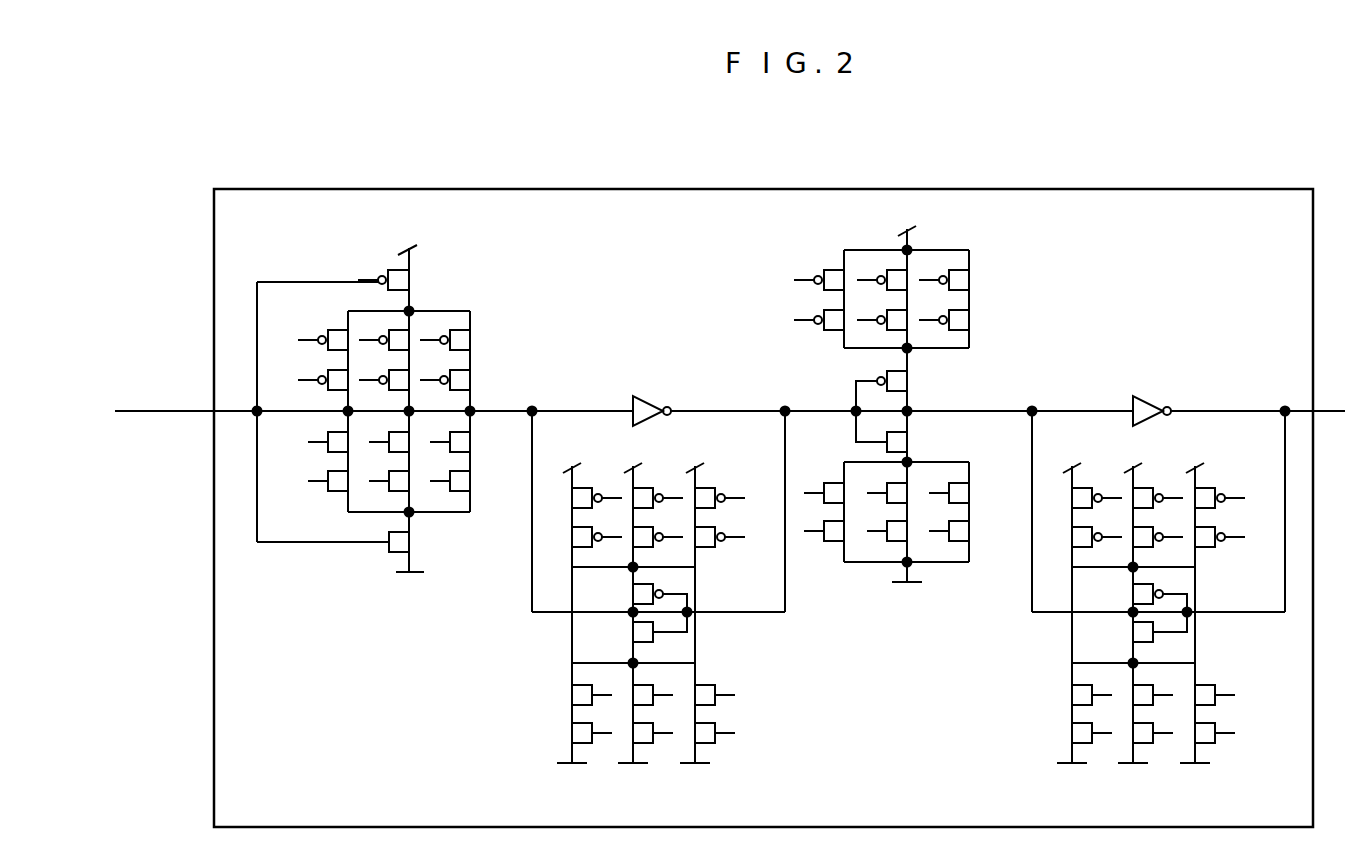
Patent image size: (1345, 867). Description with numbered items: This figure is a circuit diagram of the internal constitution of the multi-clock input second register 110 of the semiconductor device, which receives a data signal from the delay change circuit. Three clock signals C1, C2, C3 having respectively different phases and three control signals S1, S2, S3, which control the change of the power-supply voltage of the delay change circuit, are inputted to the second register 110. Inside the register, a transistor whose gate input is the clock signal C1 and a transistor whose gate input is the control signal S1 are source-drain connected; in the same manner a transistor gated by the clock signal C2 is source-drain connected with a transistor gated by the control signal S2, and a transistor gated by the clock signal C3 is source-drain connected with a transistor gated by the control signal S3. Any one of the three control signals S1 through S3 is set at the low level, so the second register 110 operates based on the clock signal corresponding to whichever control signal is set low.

The second register 110 is at (747, 184).
The control signal S1 is at (1119, 713).
The control signal S2 is at (1181, 713).
The control signal S3 is at (1243, 713).
The clock signal C1 is at (1119, 673).
The clock signal C2 is at (1181, 673).
The clock signal C3 is at (1243, 673).